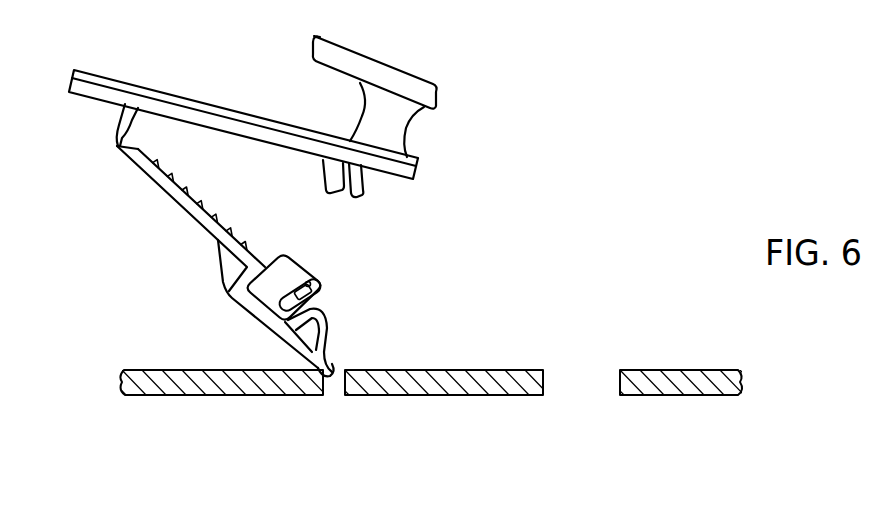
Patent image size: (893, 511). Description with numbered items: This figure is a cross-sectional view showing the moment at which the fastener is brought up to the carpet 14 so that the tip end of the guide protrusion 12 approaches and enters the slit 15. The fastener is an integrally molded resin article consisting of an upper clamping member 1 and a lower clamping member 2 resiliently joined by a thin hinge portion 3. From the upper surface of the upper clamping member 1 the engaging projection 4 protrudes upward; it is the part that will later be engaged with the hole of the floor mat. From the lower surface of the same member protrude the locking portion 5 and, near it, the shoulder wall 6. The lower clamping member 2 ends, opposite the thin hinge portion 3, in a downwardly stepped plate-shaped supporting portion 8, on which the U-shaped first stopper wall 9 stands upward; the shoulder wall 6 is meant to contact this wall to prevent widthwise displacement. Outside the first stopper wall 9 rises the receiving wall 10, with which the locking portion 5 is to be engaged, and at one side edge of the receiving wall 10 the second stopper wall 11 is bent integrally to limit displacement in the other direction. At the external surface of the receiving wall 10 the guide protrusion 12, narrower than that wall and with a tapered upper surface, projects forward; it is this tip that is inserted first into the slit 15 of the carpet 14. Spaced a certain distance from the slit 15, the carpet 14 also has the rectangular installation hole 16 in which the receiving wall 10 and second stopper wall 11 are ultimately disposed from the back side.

The upper clamping member 1 is at (99, 88).
The lower clamping member 2 is at (167, 186).
The thin hinge portion 3 is at (118, 143).
The engaging projection 4 is at (397, 121).
The locking portion 5 is at (364, 188).
The shoulder wall 6 is at (322, 178).
The supporting portion 8 is at (248, 306).
The first stopper wall 9 is at (283, 257).
The receiving wall 10 is at (320, 289).
The second stopper wall 11 is at (306, 283).
The guide protrusion 12 is at (335, 334).
The carpet 14 is at (193, 397).
The slit 15 is at (330, 398).
The installation hole 16 is at (590, 387).